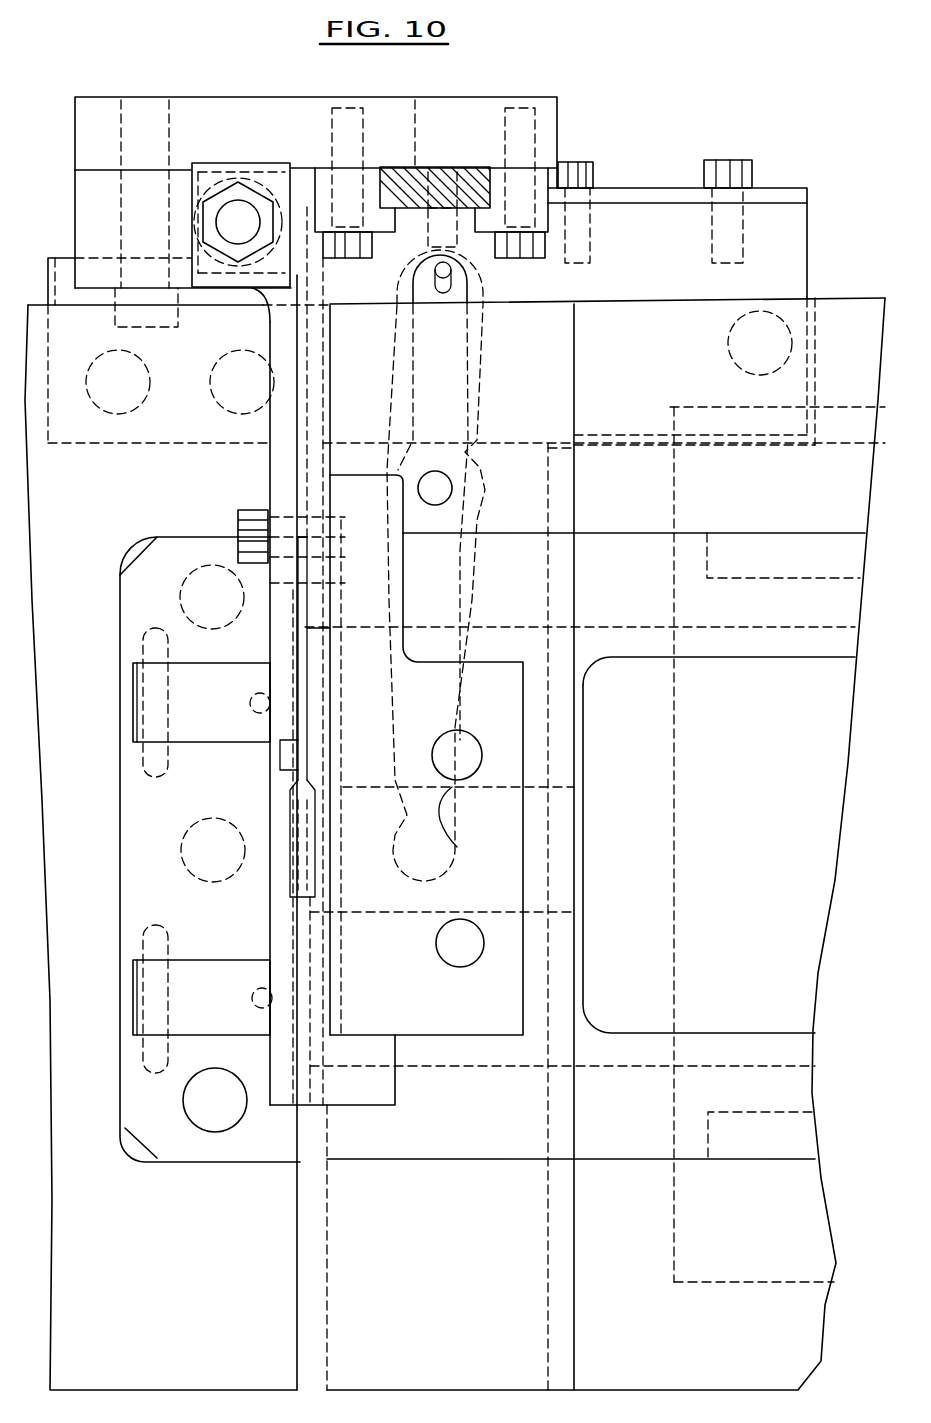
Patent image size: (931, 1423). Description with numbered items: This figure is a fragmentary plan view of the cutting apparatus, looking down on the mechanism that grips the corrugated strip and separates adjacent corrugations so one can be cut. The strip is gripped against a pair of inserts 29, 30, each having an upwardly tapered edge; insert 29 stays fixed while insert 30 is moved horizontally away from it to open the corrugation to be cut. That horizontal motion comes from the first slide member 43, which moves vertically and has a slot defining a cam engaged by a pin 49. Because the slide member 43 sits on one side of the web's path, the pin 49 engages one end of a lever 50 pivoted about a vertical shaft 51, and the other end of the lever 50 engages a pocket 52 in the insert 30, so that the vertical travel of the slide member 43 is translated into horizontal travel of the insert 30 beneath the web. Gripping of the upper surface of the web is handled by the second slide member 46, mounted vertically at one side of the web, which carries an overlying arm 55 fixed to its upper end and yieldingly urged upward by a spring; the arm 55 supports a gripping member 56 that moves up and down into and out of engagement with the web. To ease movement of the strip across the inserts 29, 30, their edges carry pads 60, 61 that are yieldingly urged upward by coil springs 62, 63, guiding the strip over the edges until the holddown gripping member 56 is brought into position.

The insert 29 is at (212, 1147).
The insert 30 is at (352, 1145).
The first slide member 43 is at (447, 168).
The second slide member 46 is at (240, 215).
The pin 49 is at (458, 236).
The lever 50 is at (450, 406).
The vertical shaft 51 is at (438, 488).
The pocket 52 is at (452, 812).
The overlying arm 55 is at (279, 470).
The gripping member 56 is at (386, 1088).
The pad 60 is at (218, 732).
The pad 61 is at (195, 973).
The coil spring 62 is at (256, 696).
The coil spring 63 is at (257, 990).